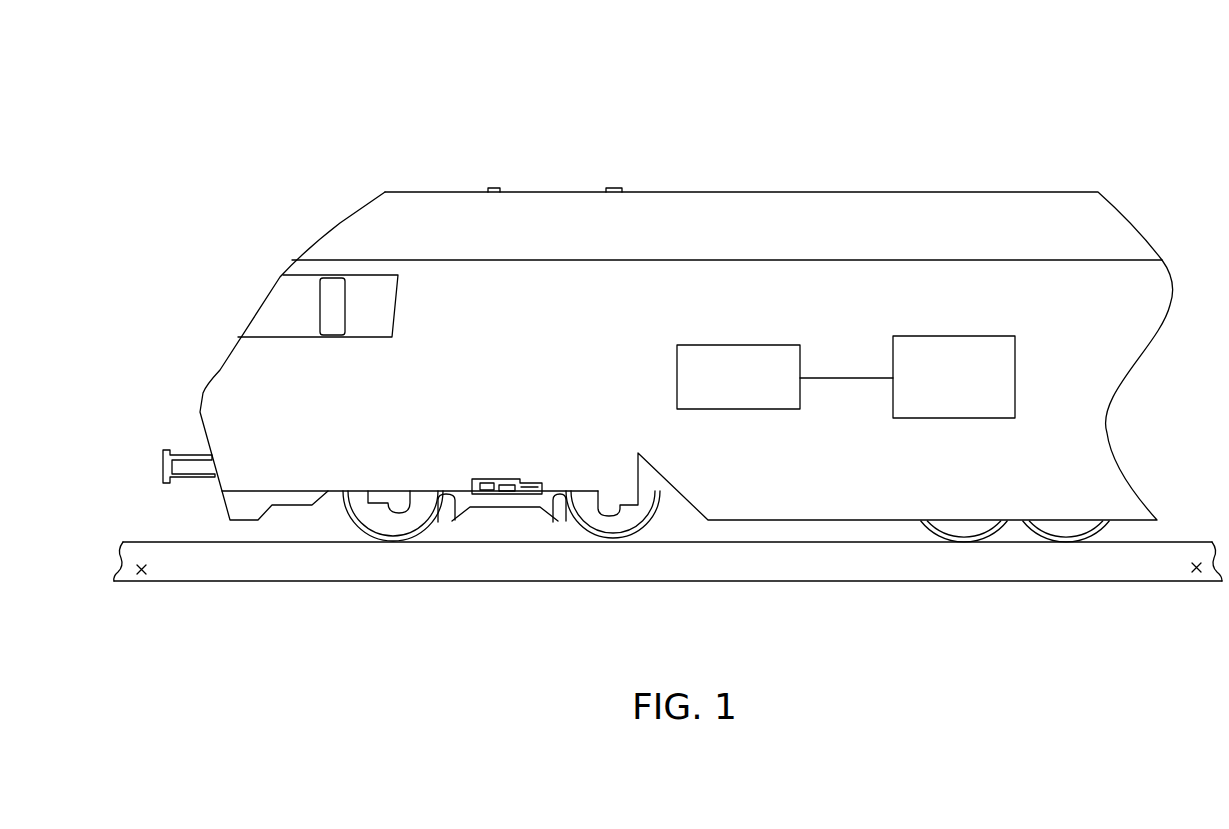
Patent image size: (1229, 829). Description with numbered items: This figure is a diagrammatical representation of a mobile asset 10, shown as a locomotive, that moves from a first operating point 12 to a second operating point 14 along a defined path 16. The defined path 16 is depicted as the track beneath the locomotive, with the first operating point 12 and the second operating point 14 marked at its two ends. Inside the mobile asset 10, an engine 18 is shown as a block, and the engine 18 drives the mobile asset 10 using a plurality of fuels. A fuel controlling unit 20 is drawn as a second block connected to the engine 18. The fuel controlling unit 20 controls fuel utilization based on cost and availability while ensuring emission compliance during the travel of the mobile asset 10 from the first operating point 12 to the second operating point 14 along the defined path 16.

The mobile asset 10 is at (1124, 92).
The first operating point 12 is at (1196, 575).
The second operating point 14 is at (141, 575).
The defined path 16 is at (820, 573).
The engine 18 is at (738, 345).
The fuel controlling unit 20 is at (953, 336).